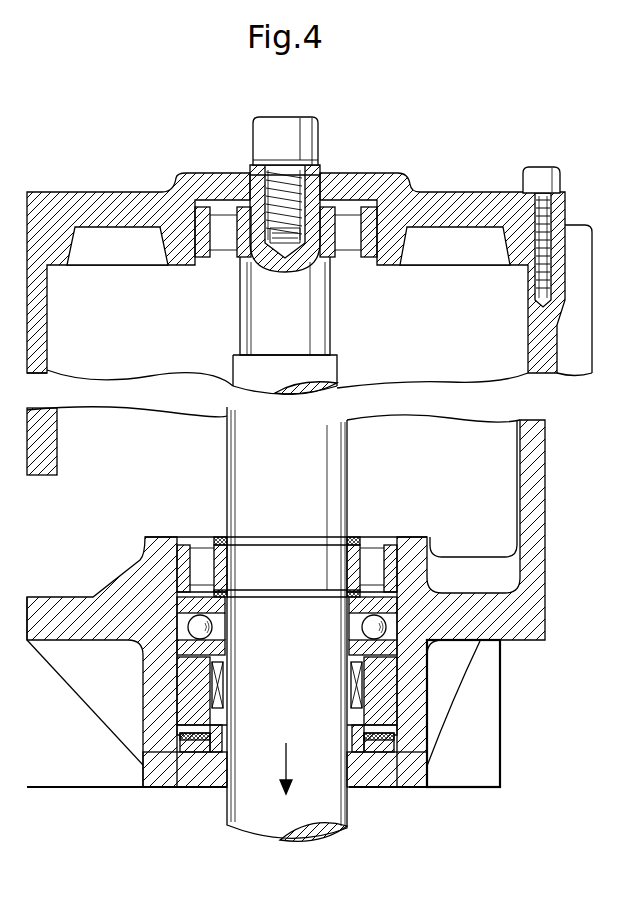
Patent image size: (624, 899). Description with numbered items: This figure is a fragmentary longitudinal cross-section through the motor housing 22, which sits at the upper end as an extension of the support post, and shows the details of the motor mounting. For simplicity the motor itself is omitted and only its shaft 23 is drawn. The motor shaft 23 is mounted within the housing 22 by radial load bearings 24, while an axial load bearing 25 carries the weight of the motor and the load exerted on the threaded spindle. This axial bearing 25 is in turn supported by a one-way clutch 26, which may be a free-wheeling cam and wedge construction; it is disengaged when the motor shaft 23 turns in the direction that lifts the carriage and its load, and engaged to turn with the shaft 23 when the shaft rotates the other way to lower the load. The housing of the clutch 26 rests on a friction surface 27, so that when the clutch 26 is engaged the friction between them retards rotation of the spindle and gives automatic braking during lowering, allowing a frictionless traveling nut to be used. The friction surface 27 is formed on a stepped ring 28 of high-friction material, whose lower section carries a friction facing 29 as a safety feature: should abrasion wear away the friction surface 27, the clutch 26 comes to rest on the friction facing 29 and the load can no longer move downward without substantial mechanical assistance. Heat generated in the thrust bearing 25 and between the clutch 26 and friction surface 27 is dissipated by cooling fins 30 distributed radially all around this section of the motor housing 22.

The motor housing 22 is at (536, 328).
The motor shaft 23 is at (340, 463).
The radial load bearings 24 is at (350, 218).
The axial load bearing 25 is at (364, 628).
The one-way clutch 26 is at (382, 683).
The friction surface 27 is at (360, 735).
The ring 28 is at (210, 744).
The friction facing 29 is at (383, 736).
The cooling fins 30 is at (102, 707).